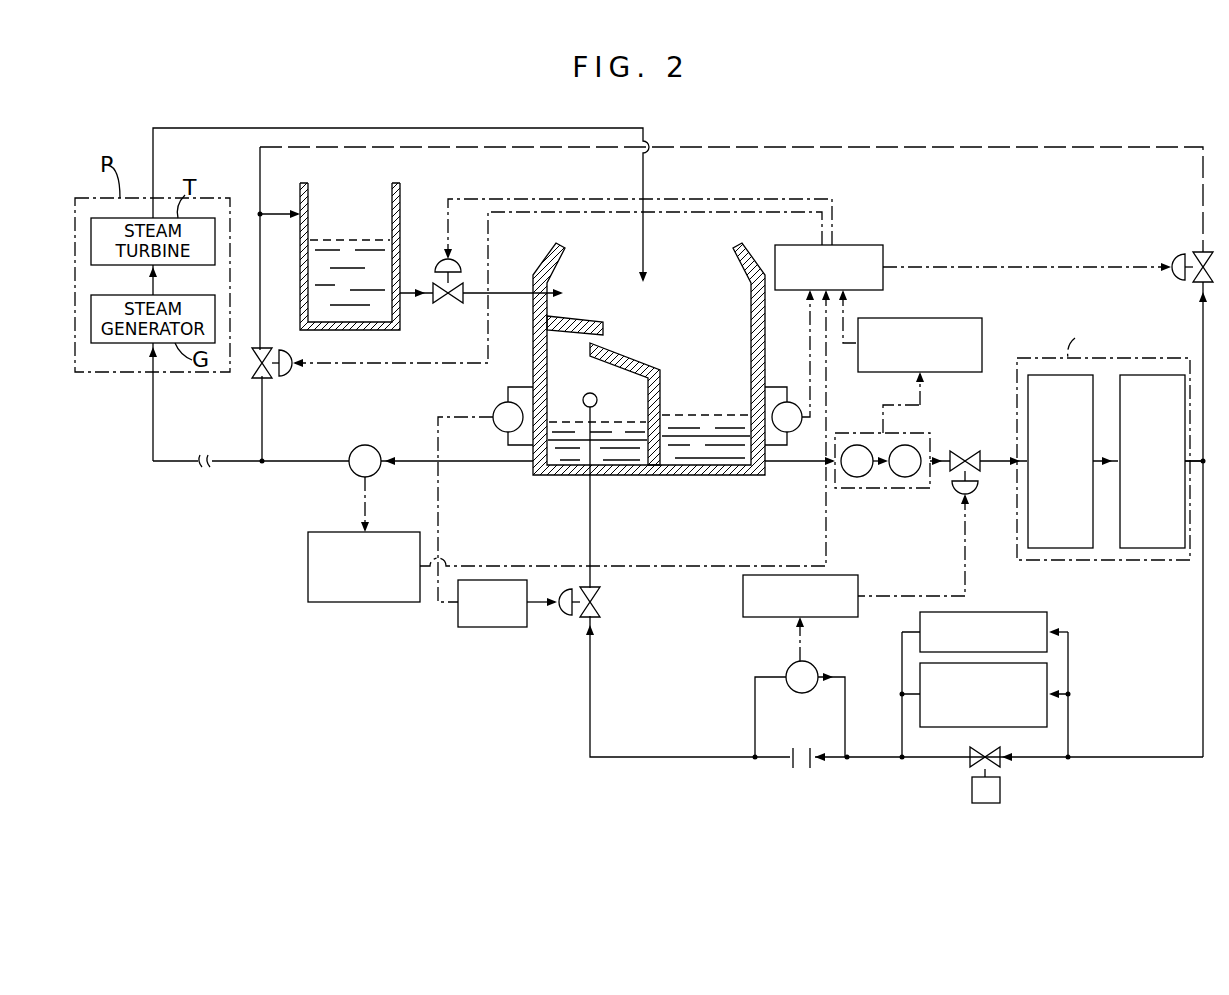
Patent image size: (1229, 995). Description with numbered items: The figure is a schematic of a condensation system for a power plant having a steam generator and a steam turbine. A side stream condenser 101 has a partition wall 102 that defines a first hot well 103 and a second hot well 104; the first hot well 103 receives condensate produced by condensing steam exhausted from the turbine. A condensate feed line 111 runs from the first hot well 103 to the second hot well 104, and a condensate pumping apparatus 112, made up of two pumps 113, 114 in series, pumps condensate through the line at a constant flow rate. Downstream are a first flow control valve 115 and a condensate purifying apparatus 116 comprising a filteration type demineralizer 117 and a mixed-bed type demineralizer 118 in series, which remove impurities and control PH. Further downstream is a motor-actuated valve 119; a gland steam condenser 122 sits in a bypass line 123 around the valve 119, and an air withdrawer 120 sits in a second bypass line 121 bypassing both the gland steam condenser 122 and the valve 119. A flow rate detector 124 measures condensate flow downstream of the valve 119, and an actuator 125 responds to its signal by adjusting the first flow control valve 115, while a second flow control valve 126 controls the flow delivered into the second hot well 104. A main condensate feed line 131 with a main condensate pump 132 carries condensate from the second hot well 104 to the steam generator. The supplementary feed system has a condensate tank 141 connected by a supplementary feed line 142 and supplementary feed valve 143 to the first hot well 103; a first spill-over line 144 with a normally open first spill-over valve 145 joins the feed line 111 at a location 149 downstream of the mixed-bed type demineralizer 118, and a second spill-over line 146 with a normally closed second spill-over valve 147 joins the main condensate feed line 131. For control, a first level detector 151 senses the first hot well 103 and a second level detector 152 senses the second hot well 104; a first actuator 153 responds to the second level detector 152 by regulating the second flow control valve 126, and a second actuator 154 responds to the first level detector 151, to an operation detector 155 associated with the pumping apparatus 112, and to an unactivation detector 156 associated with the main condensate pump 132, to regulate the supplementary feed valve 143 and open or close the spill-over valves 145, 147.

The side stream condenser 101 is at (766, 255).
The partition wall 102 is at (612, 352).
The first hot well 103 is at (712, 463).
The second hot well 104 is at (614, 463).
The condensate feed line 111 is at (791, 463).
The condensate pumping apparatus 112 is at (868, 433).
The pump 113 is at (855, 477).
The pump 114 is at (905, 477).
The first flow control valve 115 is at (963, 451).
The condensate purifying apparatus 116 is at (1103, 438).
The filteration type demineralizer 117 is at (1055, 548).
The mixed-bed type demineralizer 118 is at (1152, 548).
The motor-actuated valve 119 is at (995, 750).
The air withdrawer 120 is at (920, 686).
The second bypass line 121 is at (1068, 688).
The gland steam condenser 122 is at (980, 612).
The bypass line 123 is at (1060, 632).
The flow rate detector 124 is at (789, 668).
The actuator 125 is at (743, 603).
The second flow control valve 126 is at (600, 608).
The main condensate feed line 131 is at (300, 463).
The main condensate pump 132 is at (374, 447).
The condensate tank 141 is at (300, 195).
The supplementary feed line 142 is at (405, 292).
The supplementary feed valve 143 is at (448, 304).
The first spill-over line 144 is at (458, 148).
The first spill-over valve 145 is at (1198, 256).
The second spill-over line 146 is at (266, 432).
The second spill-over valve 147 is at (274, 374).
The location downstream of the mixed-bed type demineralizer 149 is at (1202, 456).
The first level detector 151 is at (792, 401).
The second level detector 152 is at (497, 405).
The first actuator 153 is at (492, 627).
The second actuator 154 is at (860, 245).
The operation detector 155 is at (943, 318).
The unactivation detector 156 is at (308, 550).